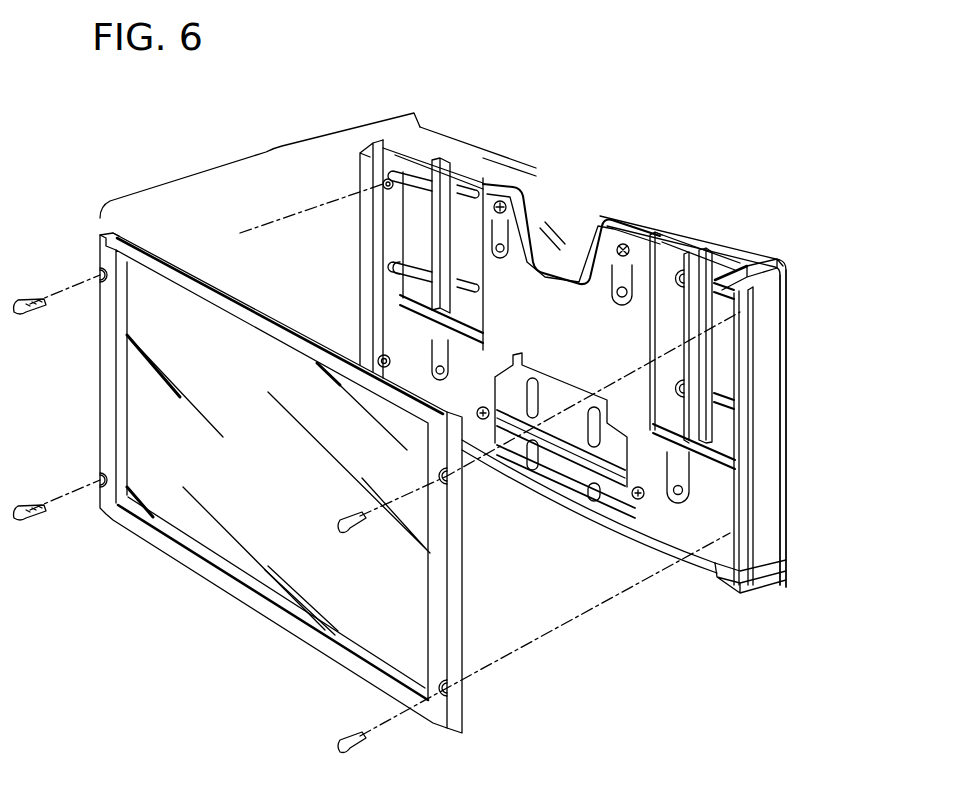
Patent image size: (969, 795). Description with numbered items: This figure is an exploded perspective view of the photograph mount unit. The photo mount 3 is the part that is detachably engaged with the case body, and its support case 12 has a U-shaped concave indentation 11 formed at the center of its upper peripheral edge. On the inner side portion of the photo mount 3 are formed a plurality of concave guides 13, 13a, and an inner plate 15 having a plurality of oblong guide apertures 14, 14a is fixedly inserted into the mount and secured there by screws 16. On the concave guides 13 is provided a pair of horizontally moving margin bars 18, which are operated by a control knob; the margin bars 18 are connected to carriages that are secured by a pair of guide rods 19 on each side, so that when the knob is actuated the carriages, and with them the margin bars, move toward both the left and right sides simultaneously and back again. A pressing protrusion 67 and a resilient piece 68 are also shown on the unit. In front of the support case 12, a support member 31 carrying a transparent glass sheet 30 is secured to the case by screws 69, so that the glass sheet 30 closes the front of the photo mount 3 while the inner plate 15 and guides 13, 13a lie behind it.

The photo mount 3 is at (277, 147).
The U-shaped concave indentation 11 is at (603, 200).
The support case 12 is at (660, 235).
The concave guide 13 is at (470, 217).
The concave guide 13a is at (560, 477).
The oblong guide aperture 14 is at (420, 162).
The oblong guide aperture 14a is at (530, 470).
The inner plate 15 is at (680, 543).
The screw 16 is at (502, 213).
The margin bar 18 is at (443, 178).
The guide rod 19 is at (470, 195).
The transparent glass sheet 30 is at (230, 550).
The support member 31 is at (148, 540).
The pressing protrusion 67 is at (568, 263).
The resilient piece 68 is at (502, 247).
The screw 69 is at (36, 306).